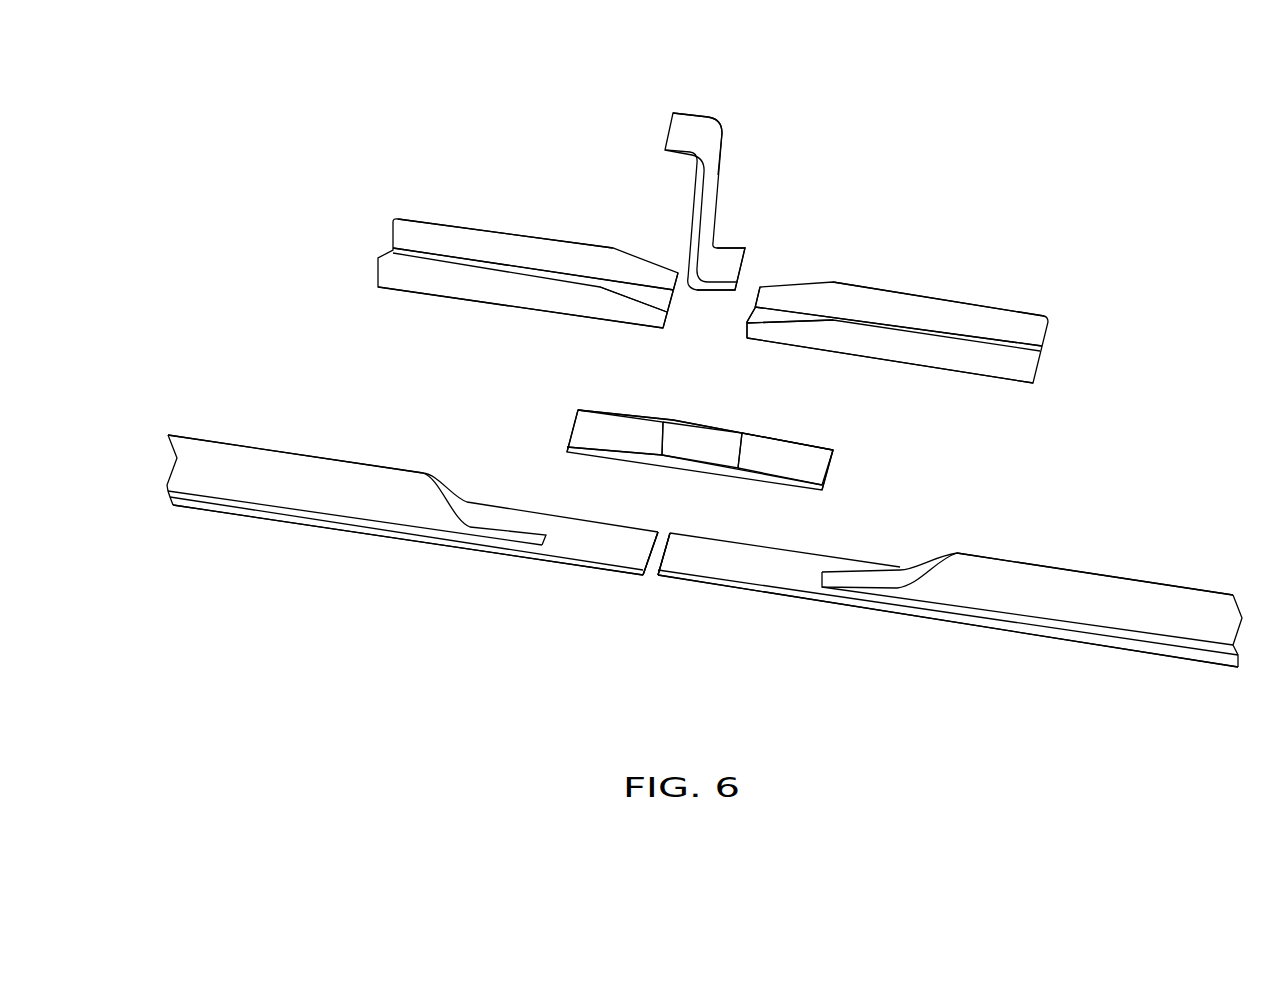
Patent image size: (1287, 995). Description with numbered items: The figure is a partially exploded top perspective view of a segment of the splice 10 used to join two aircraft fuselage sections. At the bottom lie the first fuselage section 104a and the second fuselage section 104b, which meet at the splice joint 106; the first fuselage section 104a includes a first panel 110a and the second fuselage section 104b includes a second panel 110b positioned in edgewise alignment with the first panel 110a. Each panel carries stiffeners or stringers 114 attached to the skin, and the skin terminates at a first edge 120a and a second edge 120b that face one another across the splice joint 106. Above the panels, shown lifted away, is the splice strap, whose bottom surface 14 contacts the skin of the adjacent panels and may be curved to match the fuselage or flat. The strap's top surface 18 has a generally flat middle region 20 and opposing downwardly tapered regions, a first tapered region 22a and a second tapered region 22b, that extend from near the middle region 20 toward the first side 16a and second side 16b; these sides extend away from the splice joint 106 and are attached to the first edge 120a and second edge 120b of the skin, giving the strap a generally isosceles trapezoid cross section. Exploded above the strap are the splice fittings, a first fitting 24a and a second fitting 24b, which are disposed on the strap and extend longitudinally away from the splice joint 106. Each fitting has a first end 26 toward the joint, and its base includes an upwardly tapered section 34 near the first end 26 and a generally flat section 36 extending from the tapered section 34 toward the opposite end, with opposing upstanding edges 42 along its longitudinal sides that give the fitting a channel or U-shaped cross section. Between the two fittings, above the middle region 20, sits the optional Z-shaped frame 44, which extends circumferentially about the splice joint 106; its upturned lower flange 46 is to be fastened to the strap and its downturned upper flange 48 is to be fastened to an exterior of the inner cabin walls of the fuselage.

The splice 10 is at (1066, 108).
The bottom surface 14 is at (712, 475).
The first side 16a is at (835, 470).
The second side 16b is at (567, 432).
The top surface 18 is at (688, 418).
The middle region 20 is at (697, 447).
The first tapered region 22a is at (783, 465).
The second tapered region 22b is at (622, 437).
The first fitting 24a is at (930, 293).
The second fitting 24b is at (525, 235).
The first end 26 is at (672, 322).
The tapered section 34 is at (645, 330).
The flat section 36 is at (508, 310).
The upstanding edges 42 is at (437, 222).
The frame 44 is at (718, 190).
The lower flange 46 is at (730, 256).
The upper flange 48 is at (695, 121).
The first fuselage section 104a is at (950, 595).
The second fuselage section 104b is at (677, 464).
The splice joint 106 is at (673, 588).
The first panel 110a is at (1100, 647).
The second panel 110b is at (370, 536).
The stringers 114 is at (295, 467).
The first edge 120a is at (663, 558).
The second edge 120b is at (632, 562).